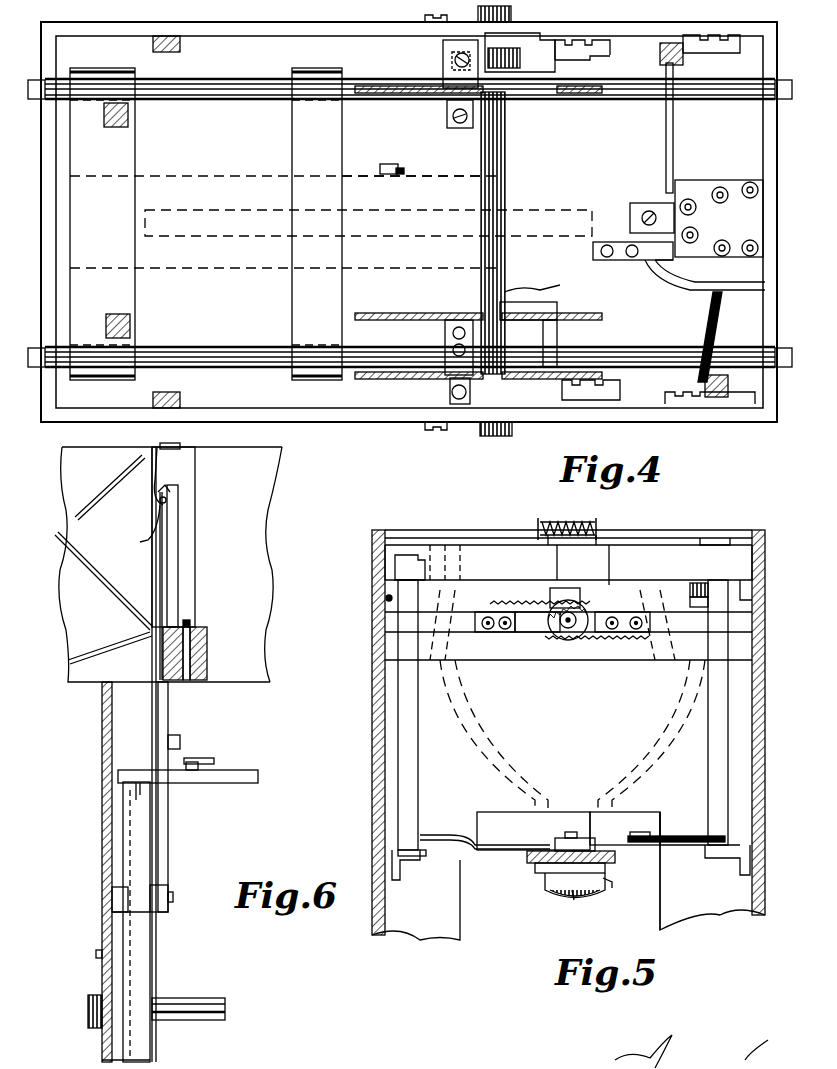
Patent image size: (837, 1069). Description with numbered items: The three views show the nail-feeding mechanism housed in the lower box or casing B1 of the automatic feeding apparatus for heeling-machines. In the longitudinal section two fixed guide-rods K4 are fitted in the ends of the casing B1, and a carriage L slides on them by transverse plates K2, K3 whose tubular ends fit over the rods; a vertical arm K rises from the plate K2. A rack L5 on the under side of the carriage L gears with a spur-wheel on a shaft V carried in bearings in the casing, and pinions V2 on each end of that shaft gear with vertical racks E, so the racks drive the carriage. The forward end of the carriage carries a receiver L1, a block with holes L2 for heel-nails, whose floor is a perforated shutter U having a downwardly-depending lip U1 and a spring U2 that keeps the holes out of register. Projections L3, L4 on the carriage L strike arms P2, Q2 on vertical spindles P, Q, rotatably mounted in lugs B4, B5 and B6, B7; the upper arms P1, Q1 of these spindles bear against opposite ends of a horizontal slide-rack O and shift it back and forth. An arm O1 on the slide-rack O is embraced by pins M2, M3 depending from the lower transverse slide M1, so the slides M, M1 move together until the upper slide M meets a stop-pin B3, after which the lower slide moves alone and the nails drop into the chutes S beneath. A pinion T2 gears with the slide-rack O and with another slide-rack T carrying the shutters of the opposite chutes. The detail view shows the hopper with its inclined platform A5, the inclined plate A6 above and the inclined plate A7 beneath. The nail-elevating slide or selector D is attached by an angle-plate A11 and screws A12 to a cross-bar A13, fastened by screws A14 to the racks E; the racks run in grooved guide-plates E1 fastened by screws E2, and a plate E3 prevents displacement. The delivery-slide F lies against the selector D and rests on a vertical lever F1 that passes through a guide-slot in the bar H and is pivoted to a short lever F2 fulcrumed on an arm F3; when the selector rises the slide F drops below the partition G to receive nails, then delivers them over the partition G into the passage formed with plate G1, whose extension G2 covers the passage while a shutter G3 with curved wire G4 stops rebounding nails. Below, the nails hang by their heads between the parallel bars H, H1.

In FIG. 4, the box or casing B1 is at (44, 168).
In FIG. 6, the box or casing B1 is at (313, 439).
In FIG. 5, the box or casing B1 is at (762, 828).
In FIG. 4, the fixed shafts or guide-rods K4 is at (237, 85).
In FIG. 4, the transverse plate K2 is at (118, 147).
In FIG. 4, the vertical arm K is at (128, 115).
In FIG. 4, the slide or carriage L is at (220, 180).
In FIG. 5, the slide or carriage L is at (616, 855).
In FIG. 4, the rack L5 is at (236, 222).
In FIG. 4, the transverse plate K3 is at (285, 316).
In FIG. 4, the projection L3 is at (400, 164).
In FIG. 4, the nail-elevating slide or selector D is at (392, 84).
In FIG. 6, the nail-elevating slide or selector D is at (153, 500).
In FIG. 4, the pinion V2 is at (518, 62).
In FIG. 4, the screw A14 is at (452, 56).
In FIG. 6, the screw A14 is at (136, 770).
In FIG. 4, the cross-bar A13 is at (458, 282).
In FIG. 6, the cross-bar A13 is at (258, 772).
In FIG. 4, the shaft V is at (546, 300).
In FIG. 6, the shaft V is at (228, 1010).
In FIG. 4, the screws E2 is at (425, 16).
In FIG. 6, the screws E2 is at (96, 953).
In FIG. 4, the short arm F3 is at (556, 62).
In FIG. 6, the short arm F3 is at (120, 900).
In FIG. 4, the lug B4 is at (658, 48).
In FIG. 5, the lug B4 is at (420, 855).
In FIG. 4, the arm P2 is at (675, 152).
In FIG. 5, the arm P2 is at (495, 848).
In FIG. 4, the vertical spindle P is at (690, 58).
In FIG. 5, the vertical spindle P is at (420, 763).
In FIG. 4, the receiver L1 is at (719, 218).
In FIG. 5, the receiver L1 is at (535, 875).
In FIG. 4, the holes L2 is at (758, 190).
In FIG. 4, the arm Q2 is at (705, 322).
In FIG. 5, the arm Q2 is at (700, 871).
In FIG. 4, the projection L4 is at (722, 296).
In FIG. 5, the projection L4 is at (640, 832).
In FIG. 4, the vertical spindle Q is at (702, 390).
In FIG. 5, the vertical spindle Q is at (708, 724).
In FIG. 4, the lug B7 is at (715, 400).
In FIG. 5, the lug B7 is at (738, 860).
In FIG. 6, the inclined platform A5 is at (98, 578).
In FIG. 6, the inclined plate A6 is at (118, 470).
In FIG. 6, the inclined plate A7 is at (90, 660).
In FIG. 6, the partition or plate G1 is at (196, 478).
In FIG. 6, the partition G is at (180, 525).
In FIG. 6, the upper horizontal extension G2 is at (168, 445).
In FIG. 6, the shutter or flap G3 is at (150, 495).
In FIG. 6, the curved wire G4 is at (140, 542).
In FIG. 6, the delivery-slide F is at (165, 580).
In FIG. 6, the bar H is at (205, 672).
In FIG. 6, the bar H1 is at (192, 658).
In FIG. 6, the vertical rack E is at (137, 840).
In FIG. 6, the grooved guide-plates E1 is at (125, 968).
In FIG. 6, the plate E3 is at (150, 1058).
In FIG. 6, the vertical lever F1 is at (170, 848).
In FIG. 6, the short lever F2 is at (158, 912).
In FIG. 6, the angle-plate A11 is at (196, 722).
In FIG. 6, the screws A12 is at (186, 755).
In FIG. 5, the transverse slide M is at (398, 545).
In FIG. 5, the transverse slide M1 is at (440, 550).
In FIG. 5, the horizontal slide-rack O is at (525, 600).
In FIG. 5, the arm O1 is at (565, 600).
In FIG. 5, the downwardly-depending pin M2 is at (556, 560).
In FIG. 5, the downwardly-depending pin M3 is at (609, 562).
In FIG. 5, the lug B5 is at (412, 566).
In FIG. 5, the stop-pin B3 is at (740, 540).
In FIG. 5, the lug B6 is at (740, 578).
In FIG. 5, the arm P1 is at (386, 598).
In FIG. 5, the arm Q1 is at (700, 583).
In FIG. 5, the slide-rack T is at (540, 640).
In FIG. 5, the pinion T2 is at (580, 640).
In FIG. 5, the nail-chutes S is at (567, 701).
In FIG. 5, the shutter U is at (547, 885).
In FIG. 5, the downwardly-depending lip U1 is at (598, 892).
In FIG. 5, the spring U2 is at (575, 900).